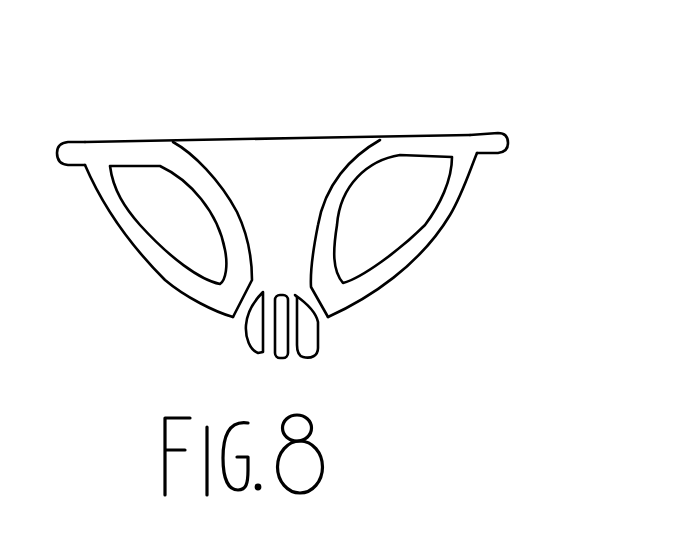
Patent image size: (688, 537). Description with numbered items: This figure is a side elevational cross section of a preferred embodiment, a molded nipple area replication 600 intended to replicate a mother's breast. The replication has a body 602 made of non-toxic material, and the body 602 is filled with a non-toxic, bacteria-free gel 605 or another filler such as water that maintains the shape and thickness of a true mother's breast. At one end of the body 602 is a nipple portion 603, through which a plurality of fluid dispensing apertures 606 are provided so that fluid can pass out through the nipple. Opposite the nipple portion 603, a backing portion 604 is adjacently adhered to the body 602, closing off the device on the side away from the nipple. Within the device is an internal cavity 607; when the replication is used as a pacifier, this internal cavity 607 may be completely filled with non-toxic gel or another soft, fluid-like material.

The molded nipple area replication 600 is at (337, 166).
The body 602 is at (408, 255).
The nipple portion 603 is at (282, 358).
The backing portion 604 is at (113, 150).
The gel 605 is at (410, 185).
The fluid dispensing apertures 606 is at (268, 358).
The internal cavity 607 is at (250, 162).